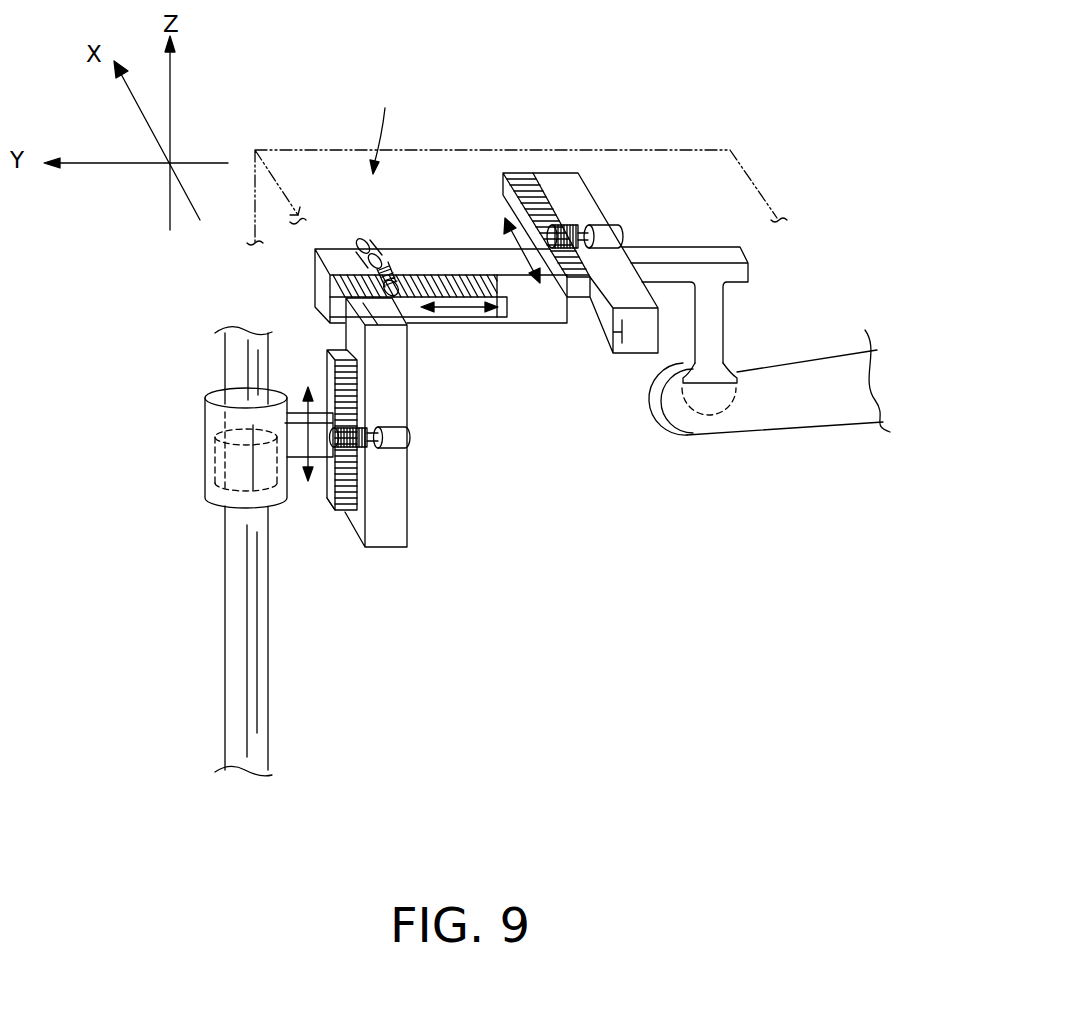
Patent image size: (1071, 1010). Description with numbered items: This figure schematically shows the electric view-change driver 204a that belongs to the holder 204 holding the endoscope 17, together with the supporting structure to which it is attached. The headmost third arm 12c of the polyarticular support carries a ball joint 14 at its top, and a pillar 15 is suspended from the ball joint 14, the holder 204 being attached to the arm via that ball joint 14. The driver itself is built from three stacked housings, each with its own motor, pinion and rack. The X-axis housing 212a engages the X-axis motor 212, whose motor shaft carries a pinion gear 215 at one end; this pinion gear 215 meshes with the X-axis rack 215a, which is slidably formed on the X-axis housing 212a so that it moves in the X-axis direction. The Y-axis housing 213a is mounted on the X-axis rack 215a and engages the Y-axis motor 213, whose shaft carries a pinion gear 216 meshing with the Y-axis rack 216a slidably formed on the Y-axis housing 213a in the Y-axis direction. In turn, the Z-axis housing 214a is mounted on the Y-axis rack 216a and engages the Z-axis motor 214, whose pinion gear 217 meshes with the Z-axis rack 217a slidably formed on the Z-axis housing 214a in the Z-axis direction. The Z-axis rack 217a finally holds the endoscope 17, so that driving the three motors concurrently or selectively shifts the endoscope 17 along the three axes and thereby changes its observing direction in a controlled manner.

The holder 204 is at (290, 150).
The electric view-change driver 204a is at (387, 128).
The X-axis motor 212 is at (620, 237).
The X-axis housing 212a is at (557, 180).
The Y-axis motor 213 is at (362, 243).
The Y-axis housing 213a is at (458, 258).
The Z-axis motor 214 is at (410, 437).
The Z-axis housing 214a is at (398, 493).
The pinion gear 215 is at (571, 225).
The X-axis rack 215a is at (518, 174).
The pinion gear 216 is at (398, 296).
The Y-axis rack 216a is at (498, 314).
The pinion gear 217 is at (334, 420).
The Z-axis rack 217a is at (327, 486).
The pillar 15 is at (725, 318).
The ball joint 14 is at (666, 365).
The third arm 12c is at (792, 418).
The endoscope 17 is at (233, 626).